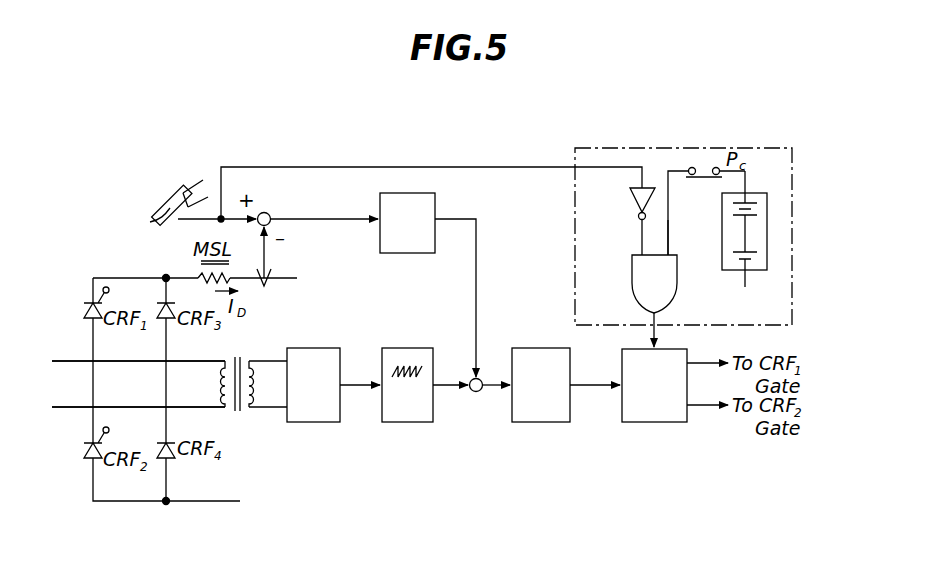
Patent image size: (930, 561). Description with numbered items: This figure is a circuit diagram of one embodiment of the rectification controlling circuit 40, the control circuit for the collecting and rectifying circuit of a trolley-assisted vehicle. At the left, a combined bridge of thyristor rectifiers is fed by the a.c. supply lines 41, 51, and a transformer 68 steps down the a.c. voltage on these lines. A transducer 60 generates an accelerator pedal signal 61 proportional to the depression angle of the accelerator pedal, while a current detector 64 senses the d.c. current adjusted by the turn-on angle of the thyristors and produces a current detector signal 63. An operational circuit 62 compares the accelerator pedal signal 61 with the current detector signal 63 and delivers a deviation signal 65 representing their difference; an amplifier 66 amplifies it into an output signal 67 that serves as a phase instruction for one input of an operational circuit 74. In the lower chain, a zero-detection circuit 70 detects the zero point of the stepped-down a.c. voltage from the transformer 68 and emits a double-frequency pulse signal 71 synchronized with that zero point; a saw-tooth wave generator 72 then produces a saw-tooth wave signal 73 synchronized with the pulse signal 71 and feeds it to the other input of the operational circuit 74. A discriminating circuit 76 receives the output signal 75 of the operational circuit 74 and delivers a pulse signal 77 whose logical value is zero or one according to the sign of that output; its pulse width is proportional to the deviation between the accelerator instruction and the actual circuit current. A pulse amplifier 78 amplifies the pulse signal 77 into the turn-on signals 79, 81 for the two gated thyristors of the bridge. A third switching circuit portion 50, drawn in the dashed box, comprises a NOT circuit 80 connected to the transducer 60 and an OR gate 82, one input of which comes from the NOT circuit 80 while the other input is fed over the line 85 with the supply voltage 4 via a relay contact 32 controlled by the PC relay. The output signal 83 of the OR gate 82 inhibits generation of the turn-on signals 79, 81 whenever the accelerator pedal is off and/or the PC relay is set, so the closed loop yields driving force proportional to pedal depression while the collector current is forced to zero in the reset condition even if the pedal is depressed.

The supply voltage 4 is at (752, 193).
The relay contact 32 is at (698, 178).
The rectification controlling circuit 40 is at (440, 448).
The supply line 41 is at (93, 361).
The third switching circuit portion 50 is at (585, 148).
The supply line 51 is at (166, 407).
The transducer 60 is at (163, 205).
The accelerator pedal signal 61 is at (183, 222).
The operational circuit 62 is at (270, 213).
The current detector signal 63 is at (266, 248).
The current detector 64 is at (268, 282).
The deviation signal 65 is at (318, 218).
The amplifier 66 is at (396, 253).
The output signal 67 is at (477, 272).
The transformer 68 is at (242, 411).
The zero-detection circuit 70 is at (310, 422).
The pulse signal 71 is at (358, 388).
The saw-tooth wave generator 72 is at (405, 422).
The saw-tooth wave signal 73 is at (452, 383).
The operational circuit 74 is at (472, 392).
The output signal 75 is at (494, 390).
The discriminating circuit 76 is at (534, 422).
The pulse signal 77 is at (591, 390).
The pulse amplifier 78 is at (645, 422).
The turn-on signal 79 is at (700, 363).
The NOT circuit 80 is at (636, 200).
The turn-on signal 81 is at (698, 406).
The OR gate 82 is at (674, 272).
The output signal 83 is at (652, 328).
The AND gate input line 85 is at (670, 236).